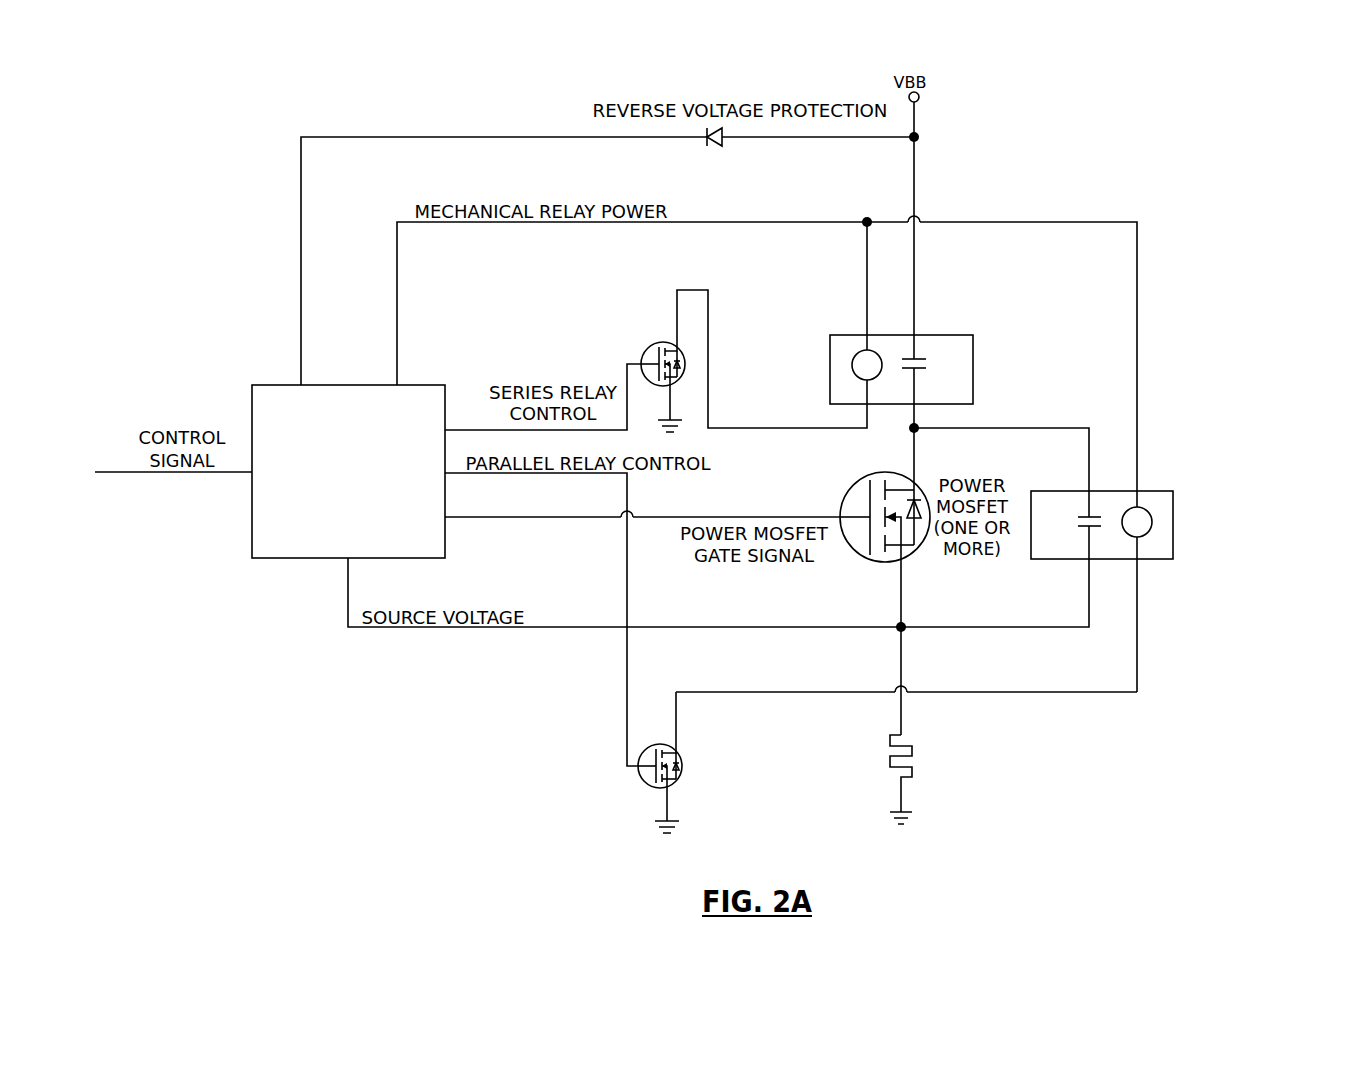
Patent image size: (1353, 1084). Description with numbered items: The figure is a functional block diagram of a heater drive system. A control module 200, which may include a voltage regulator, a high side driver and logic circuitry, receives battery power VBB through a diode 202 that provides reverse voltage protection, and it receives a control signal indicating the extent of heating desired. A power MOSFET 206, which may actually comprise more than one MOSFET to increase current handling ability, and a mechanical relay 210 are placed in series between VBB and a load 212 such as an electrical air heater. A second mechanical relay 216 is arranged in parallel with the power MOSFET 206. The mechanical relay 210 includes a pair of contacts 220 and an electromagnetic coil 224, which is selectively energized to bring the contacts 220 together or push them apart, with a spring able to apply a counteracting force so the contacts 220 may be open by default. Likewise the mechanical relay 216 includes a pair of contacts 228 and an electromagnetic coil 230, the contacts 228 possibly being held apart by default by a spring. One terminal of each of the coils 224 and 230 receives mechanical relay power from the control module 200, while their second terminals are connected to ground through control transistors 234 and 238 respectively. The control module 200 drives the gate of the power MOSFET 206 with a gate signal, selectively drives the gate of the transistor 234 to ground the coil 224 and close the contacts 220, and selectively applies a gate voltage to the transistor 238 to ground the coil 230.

The control module 200 is at (252, 525).
The diode 202 is at (721, 147).
The power MOSFET 206 is at (862, 555).
The mechanical relay 210 is at (973, 368).
The load 212 is at (888, 736).
The mechanical relay 216 is at (1156, 559).
The contacts 220 is at (915, 370).
The electromagnetic coil 224 is at (852, 365).
The contacts 228 is at (1085, 528).
The electromagnetic coil 230 is at (1148, 511).
The control transistor 234 is at (645, 350).
The control transistor 238 is at (682, 766).